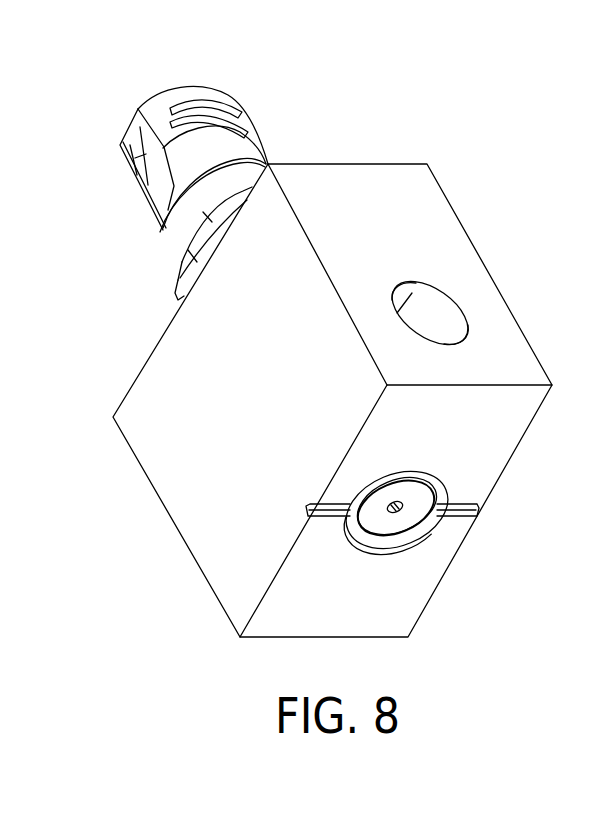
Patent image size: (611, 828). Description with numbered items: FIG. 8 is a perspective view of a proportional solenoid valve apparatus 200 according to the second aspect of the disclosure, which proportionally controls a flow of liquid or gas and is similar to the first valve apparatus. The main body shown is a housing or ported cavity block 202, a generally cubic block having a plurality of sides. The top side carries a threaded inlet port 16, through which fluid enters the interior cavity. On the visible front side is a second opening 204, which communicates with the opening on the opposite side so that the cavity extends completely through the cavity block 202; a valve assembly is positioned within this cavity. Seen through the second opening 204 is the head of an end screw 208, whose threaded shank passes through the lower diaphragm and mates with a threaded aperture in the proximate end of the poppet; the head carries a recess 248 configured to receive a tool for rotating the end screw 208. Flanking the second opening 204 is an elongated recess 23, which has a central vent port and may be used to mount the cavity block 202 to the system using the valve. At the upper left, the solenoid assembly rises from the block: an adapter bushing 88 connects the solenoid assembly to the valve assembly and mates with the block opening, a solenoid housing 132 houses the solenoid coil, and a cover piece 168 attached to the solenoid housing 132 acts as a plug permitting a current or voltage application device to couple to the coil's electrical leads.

The proportional solenoid valve apparatus 200 is at (355, 86).
The ported cavity block 202 is at (433, 619).
The threaded inlet port 16 is at (428, 313).
The cover piece 168 is at (200, 93).
The solenoid housing 132 is at (183, 222).
The adapter bushing 88 is at (187, 278).
The second opening 204 is at (400, 542).
The end screw 208 is at (438, 485).
The recess 248 is at (400, 510).
The elongated recess 23 is at (457, 512).